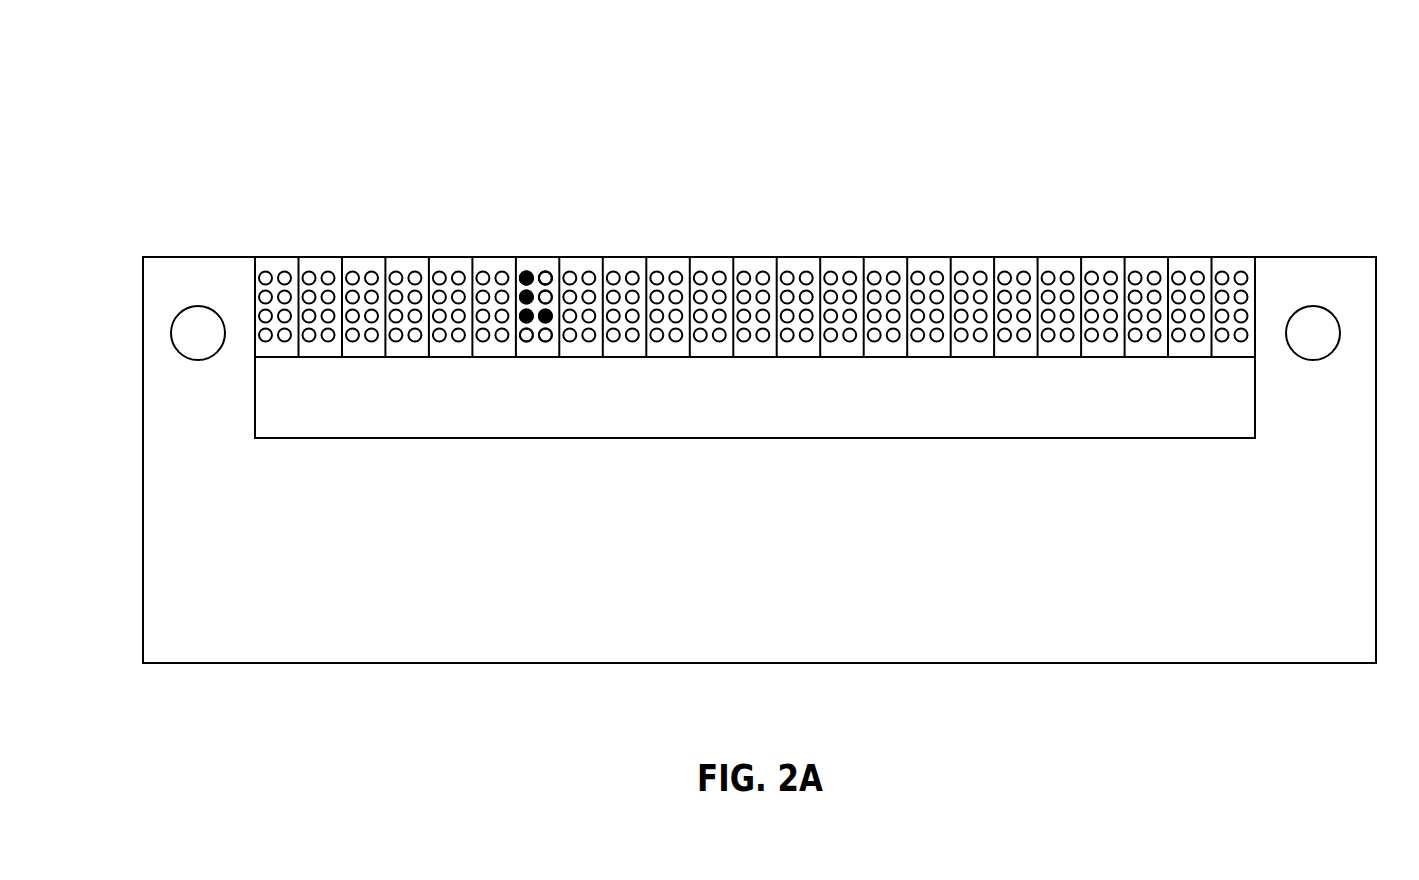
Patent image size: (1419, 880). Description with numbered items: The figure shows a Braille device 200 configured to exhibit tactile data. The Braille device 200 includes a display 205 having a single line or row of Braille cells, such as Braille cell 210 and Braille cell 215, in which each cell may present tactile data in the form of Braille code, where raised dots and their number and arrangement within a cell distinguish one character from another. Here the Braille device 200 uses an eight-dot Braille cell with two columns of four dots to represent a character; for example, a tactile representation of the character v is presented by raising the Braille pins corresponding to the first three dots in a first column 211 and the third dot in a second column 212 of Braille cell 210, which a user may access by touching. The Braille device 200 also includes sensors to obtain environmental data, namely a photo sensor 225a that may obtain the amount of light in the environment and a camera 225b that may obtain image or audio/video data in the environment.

The Braille device 200 is at (1059, 70).
The display 205 is at (462, 420).
The Braille cell 210 is at (537, 267).
The first column 211 is at (525, 272).
The second column 212 is at (546, 272).
The Braille cell 215 is at (880, 263).
The photo sensor 225a is at (196, 307).
The camera 225b is at (1318, 307).